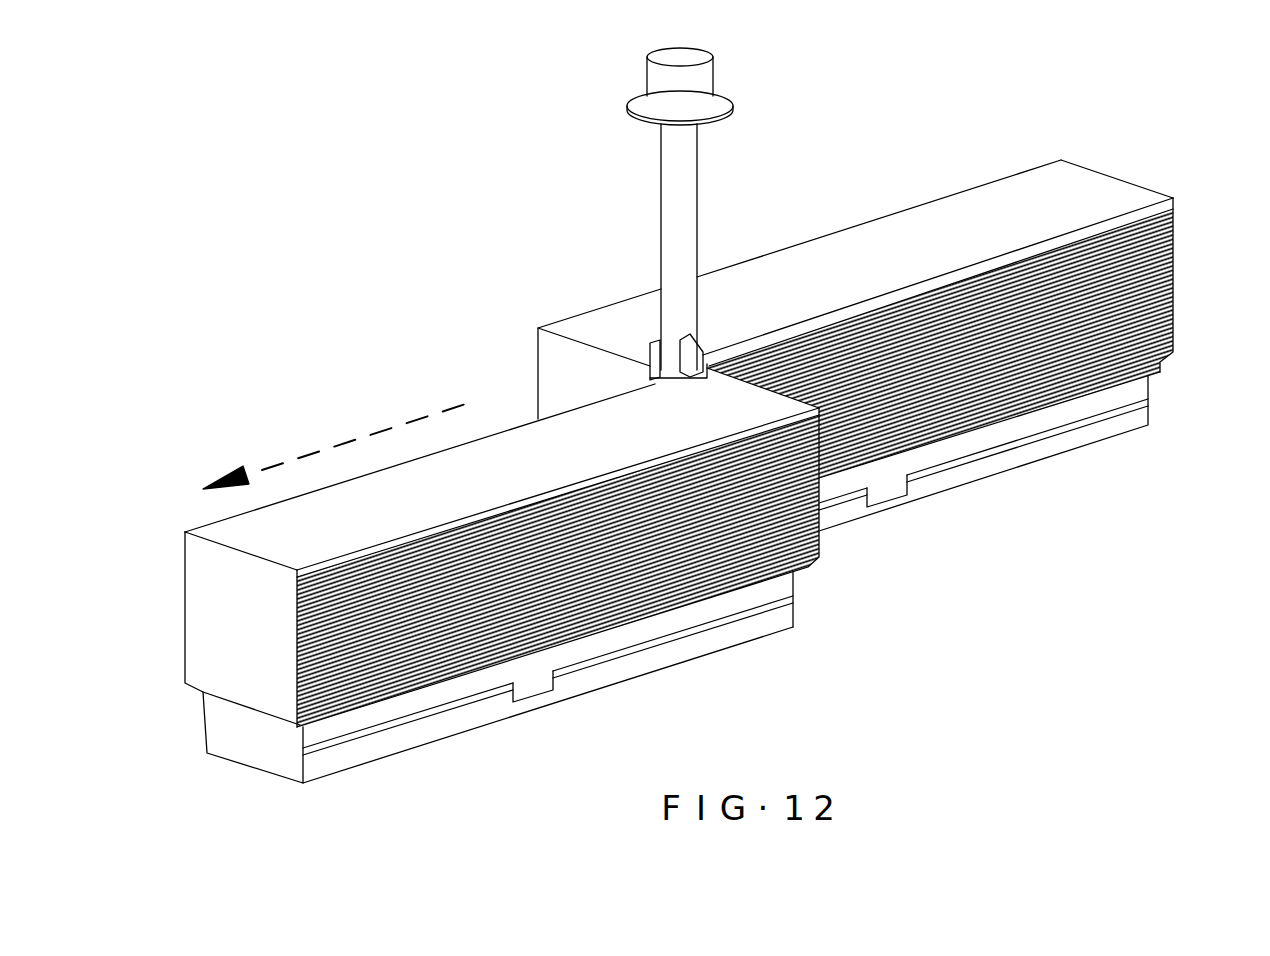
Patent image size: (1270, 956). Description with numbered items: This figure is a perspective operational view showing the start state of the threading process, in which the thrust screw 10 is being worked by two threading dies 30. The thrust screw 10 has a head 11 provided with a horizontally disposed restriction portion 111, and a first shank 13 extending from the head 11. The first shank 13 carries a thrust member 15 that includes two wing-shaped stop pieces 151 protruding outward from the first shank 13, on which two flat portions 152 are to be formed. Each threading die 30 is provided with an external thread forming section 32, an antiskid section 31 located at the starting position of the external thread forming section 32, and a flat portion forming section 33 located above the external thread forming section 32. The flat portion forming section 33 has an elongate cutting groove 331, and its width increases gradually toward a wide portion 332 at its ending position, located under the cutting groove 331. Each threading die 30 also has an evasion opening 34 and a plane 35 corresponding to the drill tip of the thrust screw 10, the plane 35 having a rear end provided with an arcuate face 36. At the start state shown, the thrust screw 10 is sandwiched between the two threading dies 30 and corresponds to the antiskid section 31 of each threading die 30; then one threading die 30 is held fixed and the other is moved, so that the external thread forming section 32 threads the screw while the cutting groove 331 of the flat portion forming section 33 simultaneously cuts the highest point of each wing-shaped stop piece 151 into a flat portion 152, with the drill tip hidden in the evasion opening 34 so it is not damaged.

The thrust screw 10 is at (674, 240).
The head 11 is at (682, 86).
The restriction portion 111 is at (641, 104).
The first shank 13 is at (700, 172).
The thrust member 15 is at (664, 343).
The wing-shaped stop piece 151 is at (704, 346).
The flat portion 152 is at (683, 380).
The threading die 30 is at (705, 453).
The antiskid section 31 is at (333, 707).
The external thread forming section 32 is at (1000, 407).
The flat portion forming section 33 is at (779, 350).
The cutting groove 331 is at (1125, 215).
The wide portion 332 is at (1166, 216).
The evasion opening 34 is at (300, 750).
The plane 35 is at (452, 733).
The arcuate face 36 is at (522, 703).